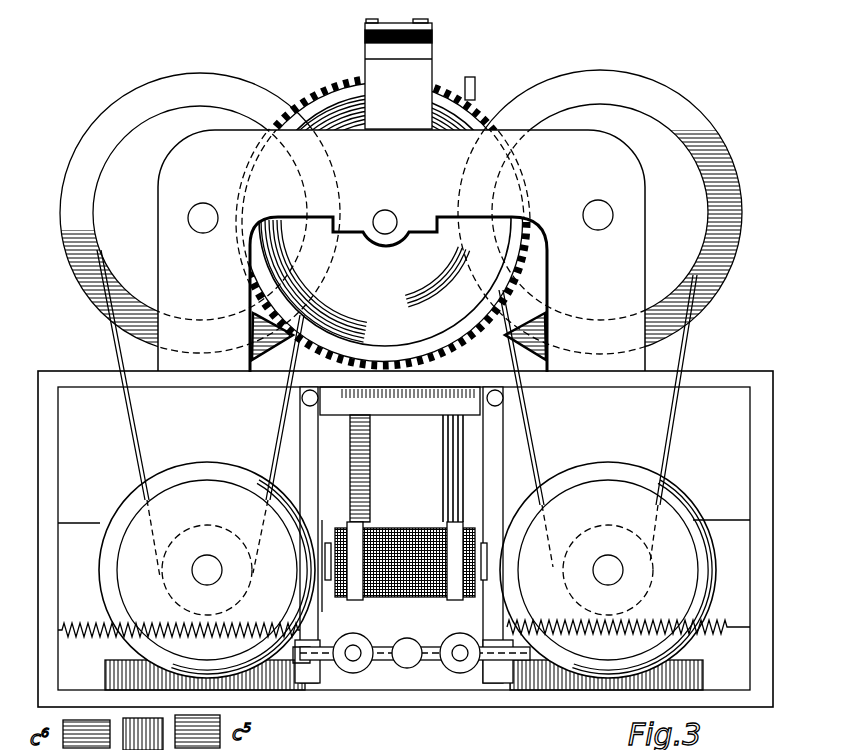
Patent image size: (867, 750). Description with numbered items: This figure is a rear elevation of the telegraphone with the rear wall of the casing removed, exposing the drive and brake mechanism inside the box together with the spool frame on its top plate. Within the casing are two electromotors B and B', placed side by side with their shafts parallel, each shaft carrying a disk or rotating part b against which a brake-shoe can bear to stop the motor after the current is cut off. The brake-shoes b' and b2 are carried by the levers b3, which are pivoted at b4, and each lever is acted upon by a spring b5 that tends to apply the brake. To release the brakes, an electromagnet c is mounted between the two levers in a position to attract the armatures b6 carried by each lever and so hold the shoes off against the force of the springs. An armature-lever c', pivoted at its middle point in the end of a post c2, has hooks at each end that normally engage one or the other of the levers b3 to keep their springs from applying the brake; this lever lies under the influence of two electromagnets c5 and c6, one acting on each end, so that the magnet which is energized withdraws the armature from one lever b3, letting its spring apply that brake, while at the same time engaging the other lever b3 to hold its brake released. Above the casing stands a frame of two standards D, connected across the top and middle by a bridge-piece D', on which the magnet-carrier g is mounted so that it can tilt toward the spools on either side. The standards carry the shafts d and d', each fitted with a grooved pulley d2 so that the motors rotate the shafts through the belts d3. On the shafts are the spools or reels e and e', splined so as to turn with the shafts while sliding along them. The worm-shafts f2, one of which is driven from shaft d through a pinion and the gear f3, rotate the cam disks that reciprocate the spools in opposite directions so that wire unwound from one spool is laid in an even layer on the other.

The standard D is at (383, 222).
The bridge-piece D' is at (398, 74).
The magnet-carrier g is at (476, 84).
The worm-shaft f2 is at (385, 236).
The gear f3 is at (398, 294).
The spool e' is at (200, 213).
The spool e is at (600, 212).
The grooved pulley d2 is at (105, 203).
The shaft d' is at (203, 231).
The shaft d is at (598, 227).
The belt d3 is at (137, 430).
The lever b3 is at (495, 470).
The pivot b4 is at (300, 399).
The disk b is at (407, 570).
The electromotor B' is at (207, 570).
The electromotor B is at (608, 570).
The electromagnet c is at (405, 549).
The armature b6 is at (326, 570).
The brake-shoe b' is at (432, 566).
The brake-shoe b2 is at (300, 607).
The spring b5 is at (118, 640).
The armature-lever c' is at (415, 671).
The electromagnet c6 is at (358, 642).
The post c2 is at (410, 640).
The electromagnet c5 is at (458, 636).